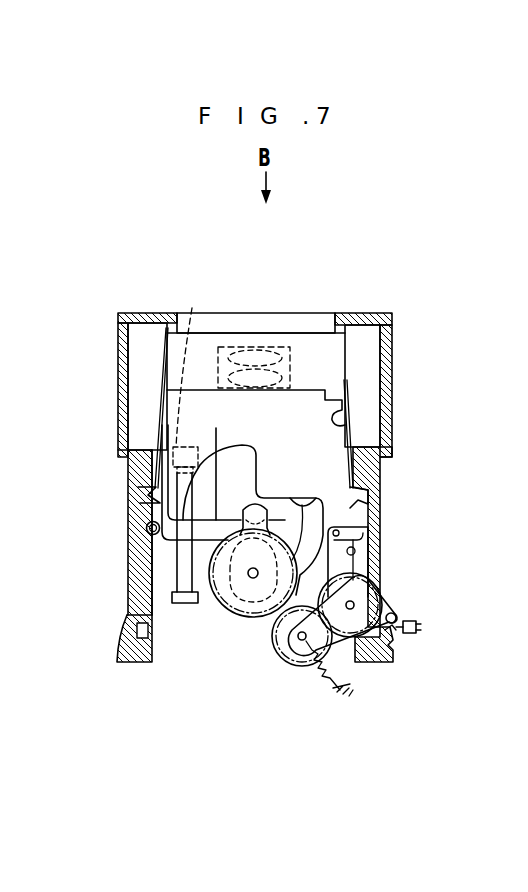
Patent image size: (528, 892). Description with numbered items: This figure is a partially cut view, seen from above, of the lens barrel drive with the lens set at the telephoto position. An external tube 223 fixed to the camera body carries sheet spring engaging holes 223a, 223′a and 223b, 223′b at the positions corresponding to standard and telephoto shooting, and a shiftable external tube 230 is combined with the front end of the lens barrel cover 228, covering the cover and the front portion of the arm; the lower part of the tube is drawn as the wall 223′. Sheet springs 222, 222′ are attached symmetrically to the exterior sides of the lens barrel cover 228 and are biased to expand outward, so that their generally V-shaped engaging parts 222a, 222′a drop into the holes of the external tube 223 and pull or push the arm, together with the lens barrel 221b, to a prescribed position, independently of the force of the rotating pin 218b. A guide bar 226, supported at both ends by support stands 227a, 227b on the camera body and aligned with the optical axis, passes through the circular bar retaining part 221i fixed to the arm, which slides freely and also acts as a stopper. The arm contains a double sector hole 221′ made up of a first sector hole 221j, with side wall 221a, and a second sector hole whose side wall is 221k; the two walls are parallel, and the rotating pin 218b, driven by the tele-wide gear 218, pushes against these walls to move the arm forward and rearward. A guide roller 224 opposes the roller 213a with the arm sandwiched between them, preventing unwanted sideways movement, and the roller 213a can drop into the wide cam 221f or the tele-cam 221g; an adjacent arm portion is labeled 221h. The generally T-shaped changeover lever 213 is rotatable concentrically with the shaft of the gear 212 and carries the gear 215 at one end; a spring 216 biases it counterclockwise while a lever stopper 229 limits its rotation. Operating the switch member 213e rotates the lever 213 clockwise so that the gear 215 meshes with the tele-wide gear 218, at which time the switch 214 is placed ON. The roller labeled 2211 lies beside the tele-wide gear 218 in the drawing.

The shiftable external tube 230 is at (388, 348).
The lens barrel cover 228 is at (218, 323).
The external tube 223 is at (135, 652).
The sheet spring engaging hole 223′a is at (130, 462).
The side wall lower portion 223′ is at (147, 600).
The sheet spring engaging hole 223′b is at (157, 640).
The bar retaining part 221i is at (158, 424).
The lens barrel 221b is at (281, 347).
The side wall of the first sector hole 221a is at (212, 460).
The first sector hole 221j is at (240, 452).
The rotating pin 218b is at (262, 497).
The wide cam 221f is at (350, 428).
The housing rib 221h is at (352, 455).
The side wall of the second sector hole 221k is at (392, 445).
The double sector hole 221′ is at (322, 480).
The tele-cam 221g is at (372, 472).
The sheet spring 222′ is at (164, 372).
The engaging part 222′a is at (145, 496).
The guide roller 224 is at (150, 527).
The sheet spring 222 is at (350, 440).
The engaging part 222a is at (368, 497).
The sheet spring engaging hole 223a is at (362, 490).
The sheet spring engaging hole 223b is at (380, 650).
The changeover lever 213 is at (362, 562).
The roller 213a is at (343, 530).
The lever stopper 229 is at (378, 545).
The tele-wide gear 218 is at (162, 540).
The roller 2211 is at (278, 615).
The support stand 227a is at (192, 308).
The support stand 227b is at (188, 604).
The guide bar 226 is at (200, 575).
The gear 212 is at (380, 588).
The gear 215 is at (306, 655).
The switch member 213e is at (396, 613).
The switch 214 is at (420, 624).
The spring 216 is at (352, 698).